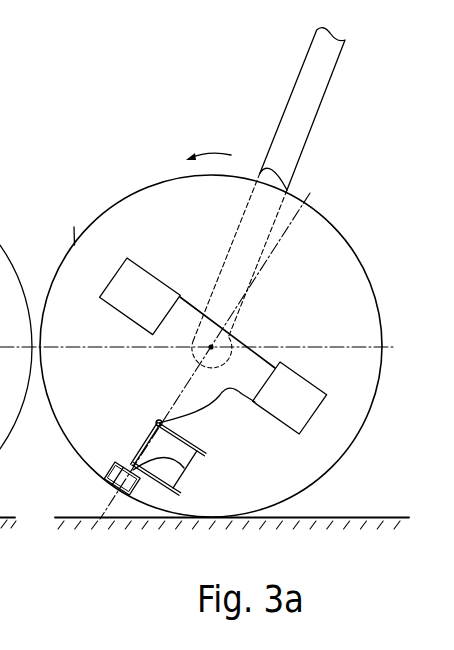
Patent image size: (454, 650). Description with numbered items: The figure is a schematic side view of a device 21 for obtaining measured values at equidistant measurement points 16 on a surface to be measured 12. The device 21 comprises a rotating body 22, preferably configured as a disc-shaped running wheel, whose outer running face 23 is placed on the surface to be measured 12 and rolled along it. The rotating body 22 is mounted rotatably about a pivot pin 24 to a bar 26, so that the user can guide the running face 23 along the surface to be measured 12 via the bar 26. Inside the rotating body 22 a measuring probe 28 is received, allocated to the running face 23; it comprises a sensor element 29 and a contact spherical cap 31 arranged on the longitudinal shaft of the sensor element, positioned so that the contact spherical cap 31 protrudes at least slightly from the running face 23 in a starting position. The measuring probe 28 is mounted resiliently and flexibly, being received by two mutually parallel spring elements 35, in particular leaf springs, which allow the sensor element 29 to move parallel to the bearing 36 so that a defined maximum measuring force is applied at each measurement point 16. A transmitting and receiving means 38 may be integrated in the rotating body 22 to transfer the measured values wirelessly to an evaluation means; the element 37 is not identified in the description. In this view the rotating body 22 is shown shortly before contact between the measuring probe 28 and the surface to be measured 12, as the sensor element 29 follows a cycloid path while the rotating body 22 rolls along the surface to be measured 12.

The surface to be measured 12 is at (0, 499).
The measurement point 16 is at (100, 522).
The device 21 is at (194, 290).
The rotating body 22 is at (128, 230).
The running face 23 is at (74, 243).
The pivot pin 24 is at (214, 346).
The bar 26 is at (311, 82).
The measuring probe 28 is at (142, 466).
The sensor element 29 is at (96, 469).
The contact spherical cap 31 is at (120, 492).
The spring element 35 is at (190, 444).
The bearing 36 is at (190, 473).
The weight 37 is at (297, 392).
The transmitting and receiving means 38 is at (142, 287).